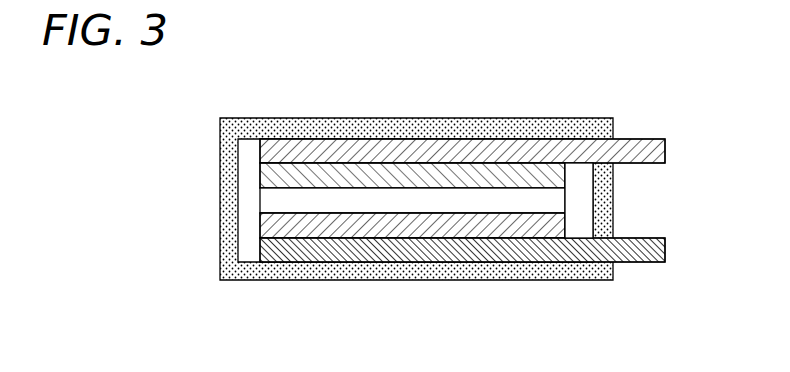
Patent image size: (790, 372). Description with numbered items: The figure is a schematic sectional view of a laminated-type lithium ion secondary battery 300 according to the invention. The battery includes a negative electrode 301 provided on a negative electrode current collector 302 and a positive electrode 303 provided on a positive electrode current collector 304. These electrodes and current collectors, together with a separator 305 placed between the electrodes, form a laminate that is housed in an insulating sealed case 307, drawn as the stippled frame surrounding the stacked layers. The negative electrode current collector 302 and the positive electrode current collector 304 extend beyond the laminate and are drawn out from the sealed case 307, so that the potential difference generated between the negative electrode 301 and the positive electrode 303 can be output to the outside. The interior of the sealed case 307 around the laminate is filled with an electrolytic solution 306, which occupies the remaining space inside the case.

The lithium ion secondary battery 300 is at (445, 80).
The negative electrode 301 is at (262, 224).
The negative electrode current collector 302 is at (645, 263).
The positive electrode 303 is at (262, 173).
The positive electrode current collector 304 is at (637, 142).
The separator 305 is at (270, 202).
The electrolytic solution 306 is at (582, 205).
The sealed case 307 is at (530, 272).